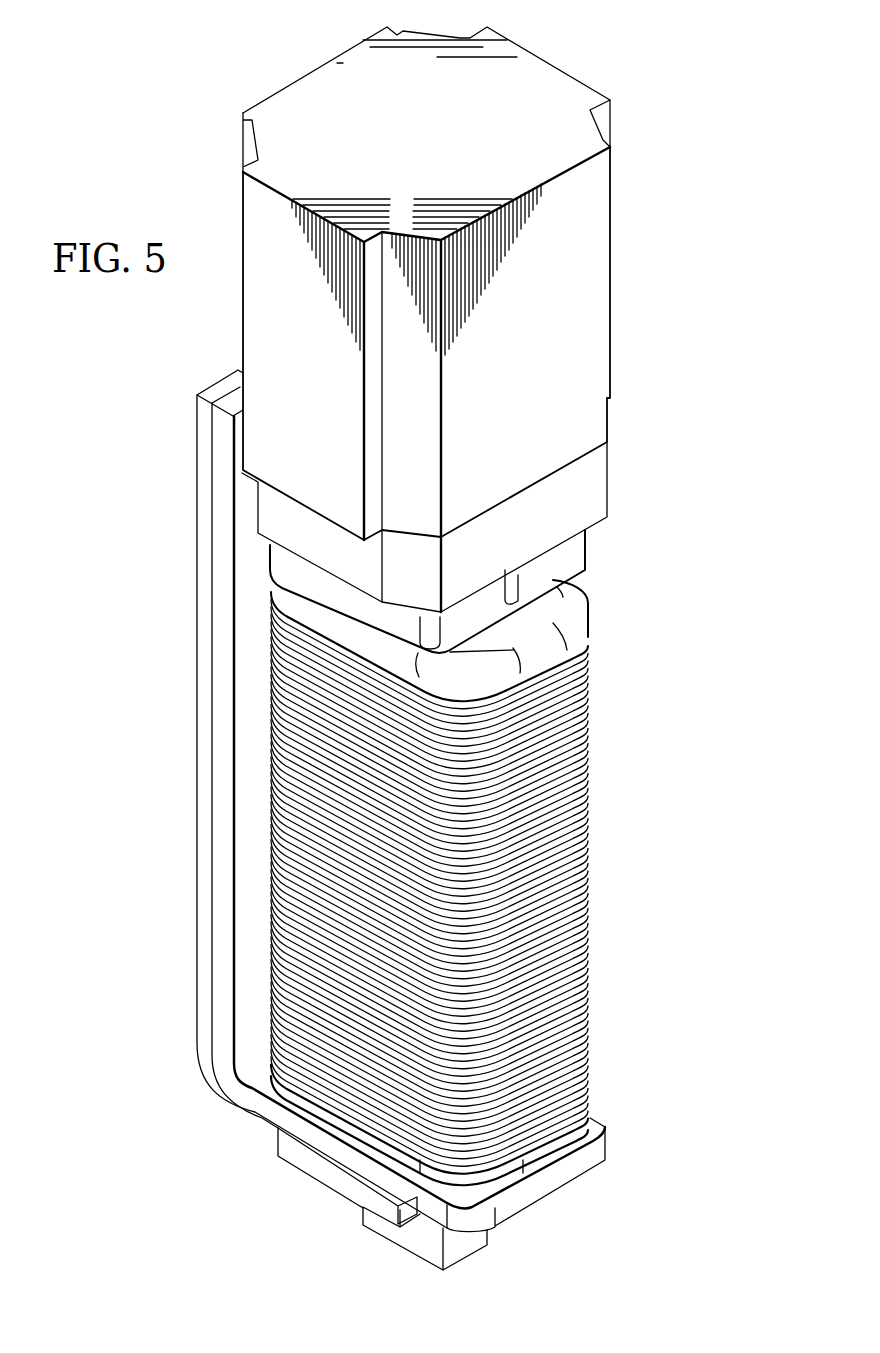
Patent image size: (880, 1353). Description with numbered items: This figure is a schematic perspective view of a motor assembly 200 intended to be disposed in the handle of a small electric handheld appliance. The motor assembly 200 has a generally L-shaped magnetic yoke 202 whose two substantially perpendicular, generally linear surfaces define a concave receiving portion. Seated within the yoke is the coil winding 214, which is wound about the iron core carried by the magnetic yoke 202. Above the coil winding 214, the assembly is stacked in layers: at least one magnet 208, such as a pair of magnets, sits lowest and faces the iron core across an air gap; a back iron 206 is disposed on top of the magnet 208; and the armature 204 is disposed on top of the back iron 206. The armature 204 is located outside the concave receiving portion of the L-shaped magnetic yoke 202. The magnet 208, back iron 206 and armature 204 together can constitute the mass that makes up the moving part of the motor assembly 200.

The motor assembly 200 is at (692, 216).
The magnetic yoke 202 is at (197, 797).
The armature 204 is at (543, 70).
The back iron 206 is at (607, 480).
The magnet 208 is at (586, 541).
The coil winding 214 is at (588, 902).